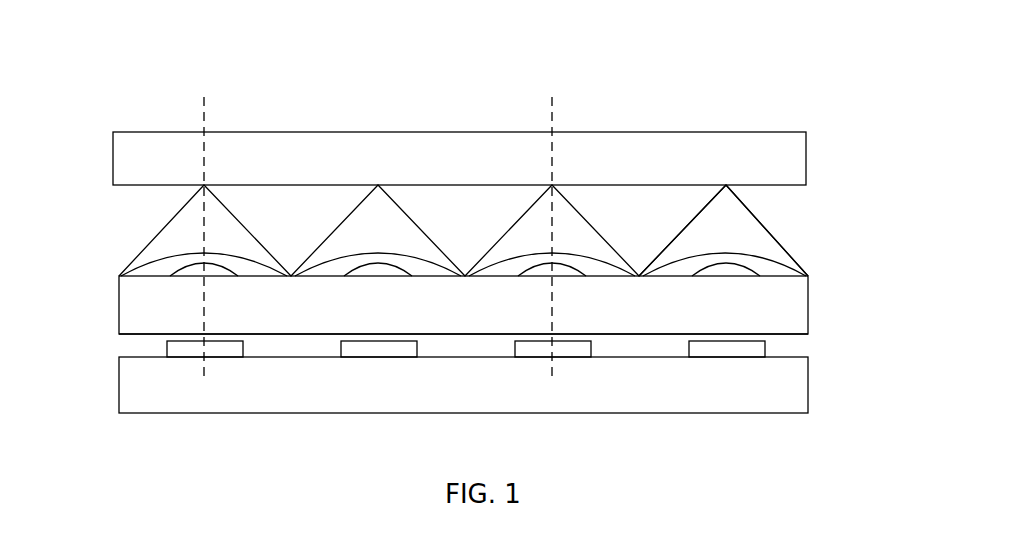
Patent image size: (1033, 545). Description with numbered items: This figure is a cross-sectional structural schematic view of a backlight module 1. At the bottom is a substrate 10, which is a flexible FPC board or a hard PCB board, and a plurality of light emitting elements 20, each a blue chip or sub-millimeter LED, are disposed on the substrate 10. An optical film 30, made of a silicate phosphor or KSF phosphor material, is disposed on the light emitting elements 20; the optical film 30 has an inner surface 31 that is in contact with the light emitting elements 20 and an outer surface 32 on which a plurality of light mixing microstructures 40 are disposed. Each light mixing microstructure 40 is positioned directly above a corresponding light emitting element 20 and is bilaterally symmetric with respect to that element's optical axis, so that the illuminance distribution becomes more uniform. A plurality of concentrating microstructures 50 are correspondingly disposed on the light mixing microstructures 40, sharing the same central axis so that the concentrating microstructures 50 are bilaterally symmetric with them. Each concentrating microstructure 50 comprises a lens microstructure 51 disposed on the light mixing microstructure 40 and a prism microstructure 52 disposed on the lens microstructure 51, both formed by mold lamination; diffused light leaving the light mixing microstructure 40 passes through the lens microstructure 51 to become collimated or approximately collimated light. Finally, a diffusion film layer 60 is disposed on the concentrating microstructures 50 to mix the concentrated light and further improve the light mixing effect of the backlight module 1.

The backlight module 1 is at (880, 32).
The substrate 10 is at (809, 390).
The light emitting elements 20 is at (765, 349).
The optical film 30 is at (809, 303).
The inner surface 31 is at (134, 336).
The outer surface 32 is at (137, 272).
The light mixing microstructures 40 is at (780, 270).
The concentrating microstructures 50 is at (530, 230).
The lens microstructure 51 is at (752, 252).
The prism microstructure 52 is at (755, 215).
The diffusion film layer 60 is at (806, 155).